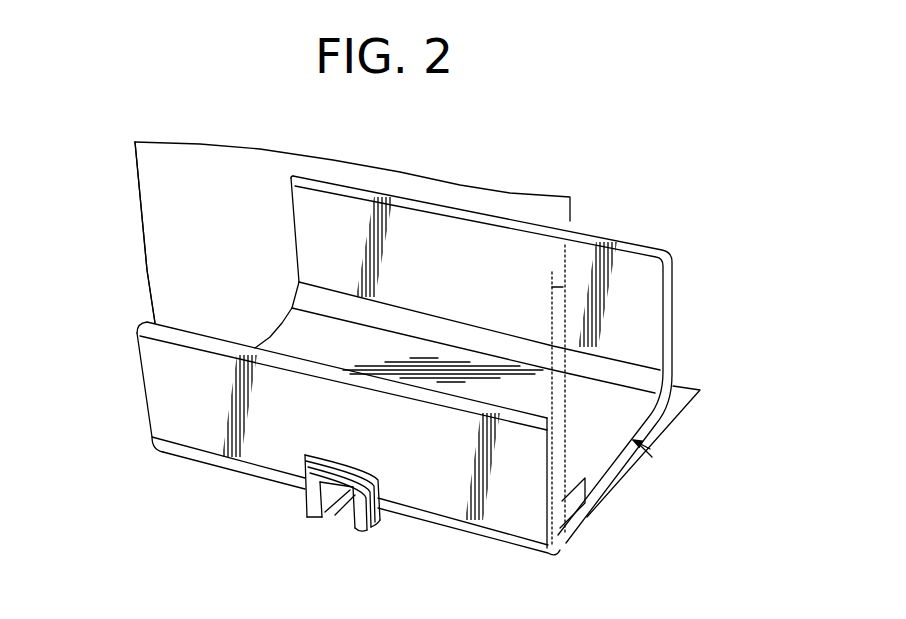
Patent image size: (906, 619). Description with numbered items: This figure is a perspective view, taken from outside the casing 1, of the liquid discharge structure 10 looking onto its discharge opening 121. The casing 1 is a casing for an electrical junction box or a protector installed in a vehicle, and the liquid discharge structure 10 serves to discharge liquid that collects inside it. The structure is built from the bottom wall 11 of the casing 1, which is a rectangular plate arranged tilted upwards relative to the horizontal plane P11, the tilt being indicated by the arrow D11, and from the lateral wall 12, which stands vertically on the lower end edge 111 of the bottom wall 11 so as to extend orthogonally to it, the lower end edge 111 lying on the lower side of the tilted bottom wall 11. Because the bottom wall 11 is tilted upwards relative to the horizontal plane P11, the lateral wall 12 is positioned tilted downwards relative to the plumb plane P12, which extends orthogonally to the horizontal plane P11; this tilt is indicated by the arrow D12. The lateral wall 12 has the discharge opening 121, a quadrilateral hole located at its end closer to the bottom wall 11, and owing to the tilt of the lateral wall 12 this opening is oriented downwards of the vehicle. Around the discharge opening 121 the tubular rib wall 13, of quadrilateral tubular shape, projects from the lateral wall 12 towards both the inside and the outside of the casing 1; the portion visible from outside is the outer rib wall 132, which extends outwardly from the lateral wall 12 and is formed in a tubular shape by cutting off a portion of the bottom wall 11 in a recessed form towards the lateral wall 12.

The casing 1 is at (615, 206).
The liquid discharge structure 10 is at (172, 472).
The bottom wall 11 is at (612, 398).
The lower end edge 111 is at (487, 540).
The lateral wall 12 is at (323, 440).
The discharge opening 121 is at (345, 506).
The tubular rib wall 13 is at (282, 493).
The outer rib wall 132 is at (303, 499).
The arrow D11 is at (650, 449).
The arrow D12 is at (562, 300).
The horizontal plane P11 is at (688, 405).
The plumb plane P12 is at (140, 203).